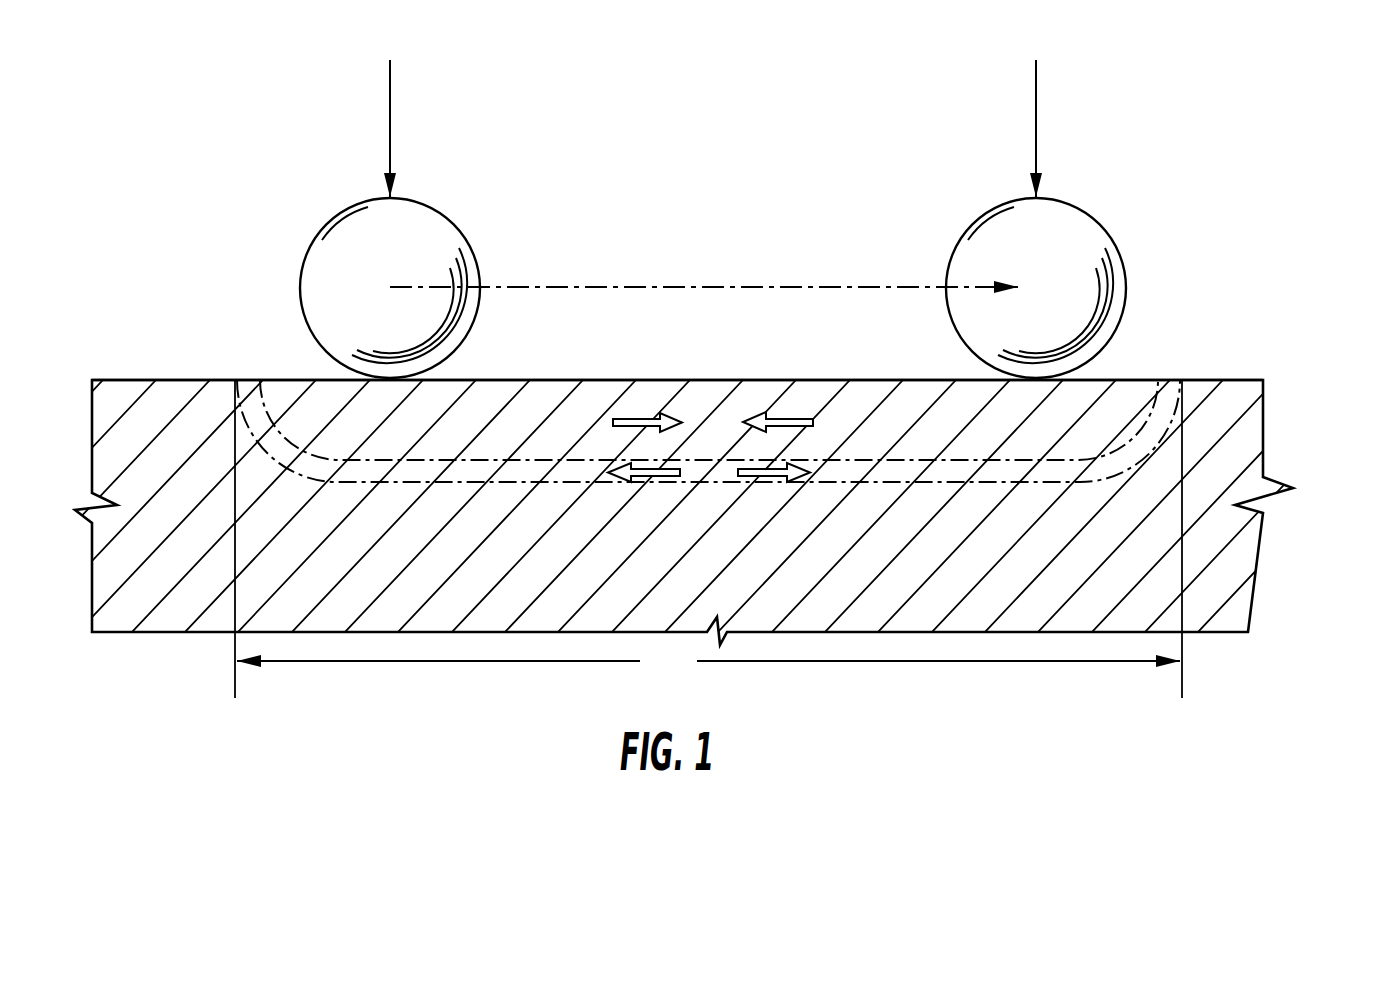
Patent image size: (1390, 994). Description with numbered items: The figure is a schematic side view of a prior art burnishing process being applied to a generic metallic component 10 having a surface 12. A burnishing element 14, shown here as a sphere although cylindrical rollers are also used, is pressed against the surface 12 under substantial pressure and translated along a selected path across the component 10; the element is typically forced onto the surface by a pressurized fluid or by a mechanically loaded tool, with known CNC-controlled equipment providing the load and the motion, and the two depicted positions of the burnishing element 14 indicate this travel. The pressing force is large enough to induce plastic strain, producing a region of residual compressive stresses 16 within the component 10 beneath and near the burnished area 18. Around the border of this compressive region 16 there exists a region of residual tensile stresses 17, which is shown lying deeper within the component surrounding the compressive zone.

The metallic component 10 is at (1276, 418).
The surface 12 is at (1213, 380).
The burnishing element 14 is at (418, 214).
The region of residual compressive stresses 16 is at (312, 393).
The region of residual tensile stresses 17 is at (425, 473).
The burnished area 18 is at (708, 539).